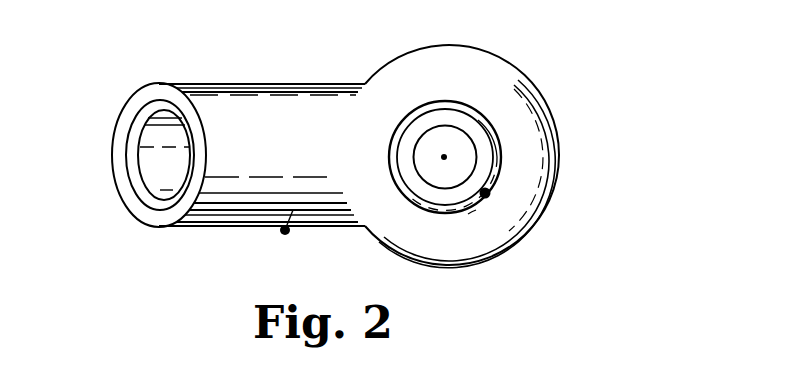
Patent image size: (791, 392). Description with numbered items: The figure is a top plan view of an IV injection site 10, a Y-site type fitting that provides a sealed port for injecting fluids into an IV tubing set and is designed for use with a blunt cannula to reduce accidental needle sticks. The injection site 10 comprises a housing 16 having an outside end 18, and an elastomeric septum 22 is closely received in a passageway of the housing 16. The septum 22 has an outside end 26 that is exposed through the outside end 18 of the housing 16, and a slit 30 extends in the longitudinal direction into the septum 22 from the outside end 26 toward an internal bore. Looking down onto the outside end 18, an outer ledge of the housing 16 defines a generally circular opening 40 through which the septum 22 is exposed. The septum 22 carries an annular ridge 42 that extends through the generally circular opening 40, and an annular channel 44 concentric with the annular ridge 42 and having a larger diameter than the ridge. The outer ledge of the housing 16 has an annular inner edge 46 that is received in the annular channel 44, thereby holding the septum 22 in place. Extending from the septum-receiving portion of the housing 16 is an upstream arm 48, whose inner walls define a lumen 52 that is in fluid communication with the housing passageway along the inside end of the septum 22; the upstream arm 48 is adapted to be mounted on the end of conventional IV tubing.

The IV injection site 10 is at (589, 57).
The housing 16 is at (285, 230).
The outside end 18 is at (533, 162).
The elastomeric septum 22 is at (473, 180).
The outside end 26 is at (444, 157).
The slit 30 is at (444, 157).
The generally circular opening 40 is at (440, 102).
The annular ridge 42 is at (442, 197).
The annular channel 44 is at (489, 128).
The annular inner edge 46 is at (470, 215).
The upstream arm 48 is at (280, 108).
The lumen 52 is at (158, 177).